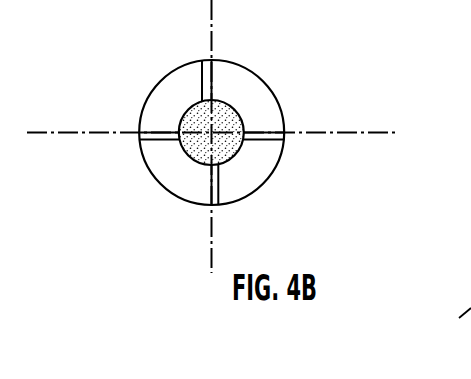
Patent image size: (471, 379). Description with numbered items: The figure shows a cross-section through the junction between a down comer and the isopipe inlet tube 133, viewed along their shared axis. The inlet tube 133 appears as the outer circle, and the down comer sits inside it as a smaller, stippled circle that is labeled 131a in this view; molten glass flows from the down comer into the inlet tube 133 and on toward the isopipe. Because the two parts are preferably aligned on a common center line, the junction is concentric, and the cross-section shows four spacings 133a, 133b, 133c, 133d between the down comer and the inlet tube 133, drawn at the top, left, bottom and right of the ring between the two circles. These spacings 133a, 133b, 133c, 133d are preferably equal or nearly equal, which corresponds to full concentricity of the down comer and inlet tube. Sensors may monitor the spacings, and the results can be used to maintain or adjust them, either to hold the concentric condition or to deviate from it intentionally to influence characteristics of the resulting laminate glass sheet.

The optical fiber core / fiber end face 131a is at (238, 103).
The isopipe inlet tube 133 is at (280, 105).
The spacing 133a is at (202, 80).
The spacing 133b is at (157, 140).
The spacing 133c is at (218, 185).
The spacing 133d is at (263, 140).